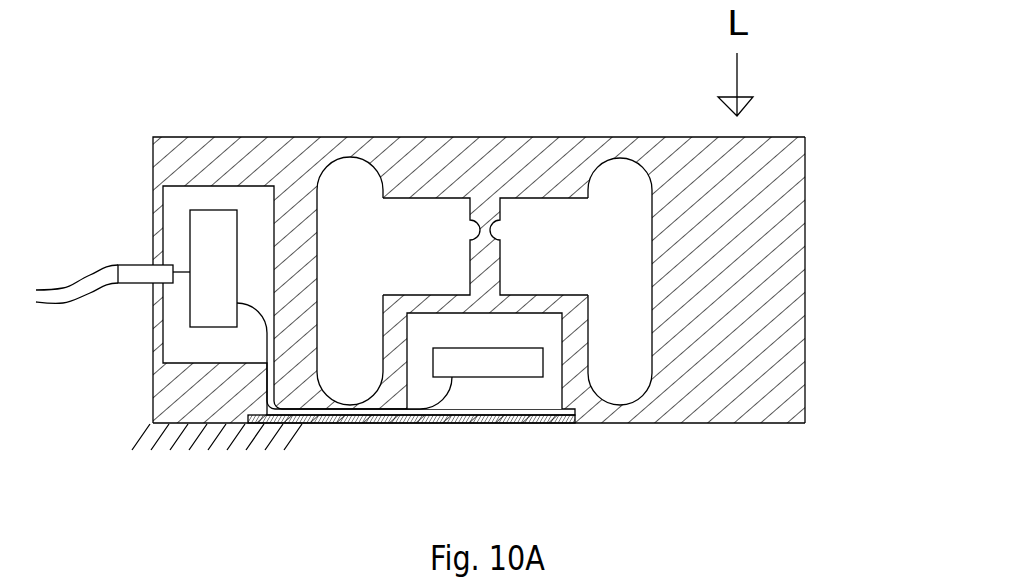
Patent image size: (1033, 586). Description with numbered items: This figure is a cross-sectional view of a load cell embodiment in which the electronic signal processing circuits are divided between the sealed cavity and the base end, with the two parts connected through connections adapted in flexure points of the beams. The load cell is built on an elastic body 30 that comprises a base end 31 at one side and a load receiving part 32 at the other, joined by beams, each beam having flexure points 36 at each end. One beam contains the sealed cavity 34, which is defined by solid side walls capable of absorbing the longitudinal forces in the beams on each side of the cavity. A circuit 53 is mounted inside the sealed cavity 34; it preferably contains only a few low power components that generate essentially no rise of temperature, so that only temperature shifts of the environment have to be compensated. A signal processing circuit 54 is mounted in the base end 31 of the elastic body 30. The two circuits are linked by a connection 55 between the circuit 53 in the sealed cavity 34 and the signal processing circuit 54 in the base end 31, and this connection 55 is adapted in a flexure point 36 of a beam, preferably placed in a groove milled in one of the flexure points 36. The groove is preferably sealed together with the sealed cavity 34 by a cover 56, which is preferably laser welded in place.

The elastic body 30 is at (172, 138).
The base end 31 is at (157, 398).
The load receiving part 32 is at (748, 402).
The sealed cavity 34 is at (473, 390).
The flexure points 36 is at (350, 157).
The circuit 53 is at (503, 363).
The signal processing circuit 54 is at (212, 307).
The connection 55 is at (443, 403).
The cover 56 is at (510, 423).